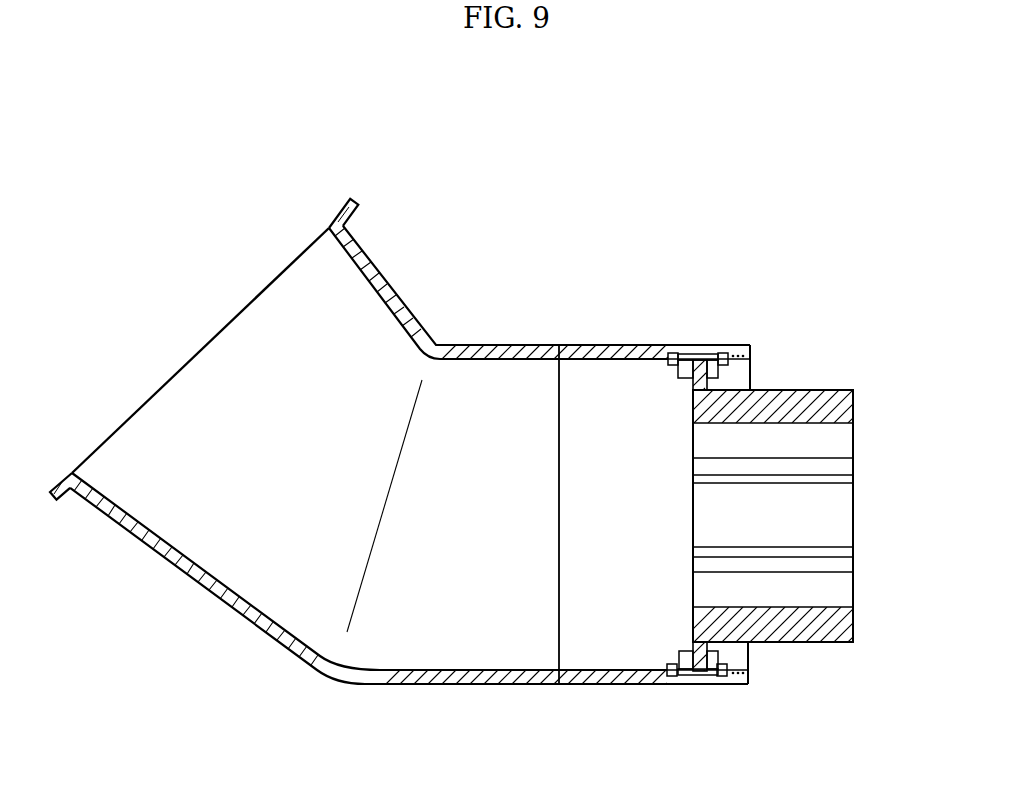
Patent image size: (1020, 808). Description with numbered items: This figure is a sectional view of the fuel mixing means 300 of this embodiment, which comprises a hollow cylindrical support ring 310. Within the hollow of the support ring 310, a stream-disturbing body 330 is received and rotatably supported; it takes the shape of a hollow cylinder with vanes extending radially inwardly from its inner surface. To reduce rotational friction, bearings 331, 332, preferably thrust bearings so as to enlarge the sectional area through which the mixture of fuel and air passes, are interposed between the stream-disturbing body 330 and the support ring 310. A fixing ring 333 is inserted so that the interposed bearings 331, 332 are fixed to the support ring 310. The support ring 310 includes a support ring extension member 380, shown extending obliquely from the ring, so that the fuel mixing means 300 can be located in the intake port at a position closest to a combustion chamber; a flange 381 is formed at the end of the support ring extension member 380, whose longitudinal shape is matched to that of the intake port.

The fuel mixing means 300 is at (516, 193).
The support ring 310 is at (605, 344).
The stream-disturbing body 330 is at (856, 406).
The bearing 331 is at (675, 684).
The bearing 332 is at (720, 684).
The fixing ring 333 is at (752, 358).
The support ring extension member 380 is at (235, 612).
The flange 381 is at (337, 203).